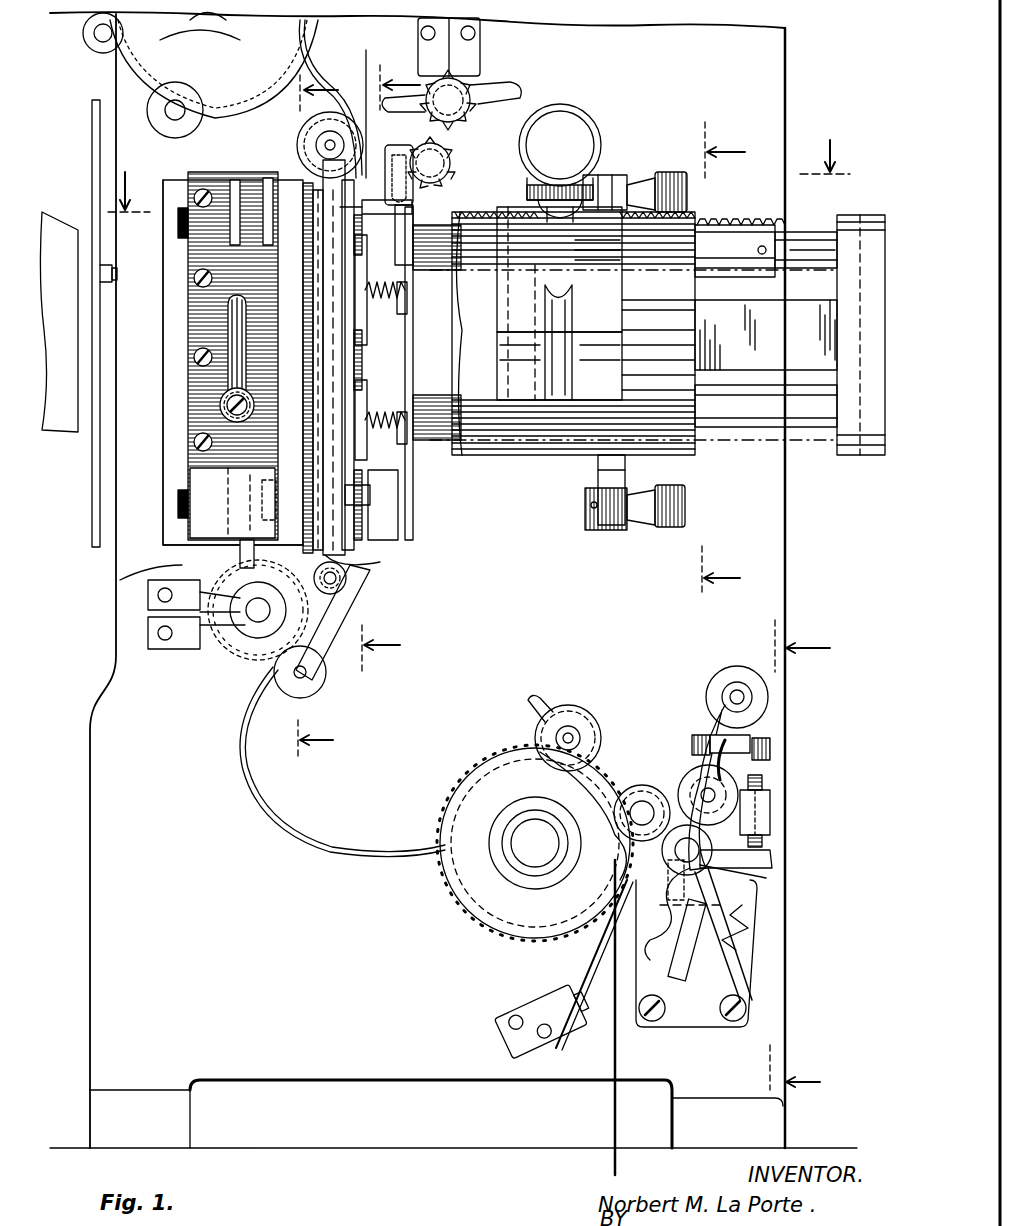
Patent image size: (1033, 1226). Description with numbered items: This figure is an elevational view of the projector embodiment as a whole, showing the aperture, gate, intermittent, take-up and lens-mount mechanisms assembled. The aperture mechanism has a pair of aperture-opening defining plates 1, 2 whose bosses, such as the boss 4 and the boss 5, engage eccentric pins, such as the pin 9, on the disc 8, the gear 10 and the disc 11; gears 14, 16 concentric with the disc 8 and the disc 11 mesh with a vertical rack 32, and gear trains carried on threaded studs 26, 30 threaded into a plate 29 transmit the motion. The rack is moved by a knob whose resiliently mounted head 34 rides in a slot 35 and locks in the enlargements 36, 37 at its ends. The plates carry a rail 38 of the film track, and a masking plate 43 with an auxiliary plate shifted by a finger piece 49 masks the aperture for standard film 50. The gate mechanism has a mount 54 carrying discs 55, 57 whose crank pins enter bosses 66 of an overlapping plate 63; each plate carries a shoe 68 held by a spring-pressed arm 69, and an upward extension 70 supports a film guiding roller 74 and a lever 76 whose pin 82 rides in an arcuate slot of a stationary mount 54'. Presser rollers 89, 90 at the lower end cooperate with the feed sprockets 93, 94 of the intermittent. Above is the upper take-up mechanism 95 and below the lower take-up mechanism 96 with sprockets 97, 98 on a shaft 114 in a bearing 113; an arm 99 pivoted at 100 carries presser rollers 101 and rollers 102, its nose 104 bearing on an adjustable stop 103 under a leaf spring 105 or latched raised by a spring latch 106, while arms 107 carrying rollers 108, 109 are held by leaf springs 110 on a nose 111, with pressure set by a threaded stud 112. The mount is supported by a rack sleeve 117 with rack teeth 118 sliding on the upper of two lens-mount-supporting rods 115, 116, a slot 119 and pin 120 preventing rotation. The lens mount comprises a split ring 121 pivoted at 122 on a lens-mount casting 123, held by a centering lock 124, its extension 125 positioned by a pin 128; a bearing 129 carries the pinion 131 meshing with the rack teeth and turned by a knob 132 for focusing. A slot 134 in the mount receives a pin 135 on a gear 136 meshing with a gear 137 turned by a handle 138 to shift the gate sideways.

The aperture-opening defining plate 1 is at (290, 438).
The aperture-opening defining plate 2 is at (304, 411).
The boss 4 is at (479, 191).
The boss 5 is at (391, 365).
The disc 8 is at (270, 178).
The pin 9 is at (723, 357).
The gear 10 is at (802, 855).
The disc 11 is at (232, 548).
The gear 14 is at (235, 180).
The gear 16 is at (185, 546).
The threaded stud 26 is at (178, 225).
The plate 29 is at (183, 426).
The threaded stud 30 is at (178, 495).
The rack 32 is at (120, 580).
The head 34 is at (220, 405).
The slot 35 is at (226, 340).
The enlargement 36 is at (232, 308).
The enlargement 37 is at (222, 416).
The rail 38 is at (295, 452).
The masking plate 43 is at (298, 382).
The finger piece 49 is at (300, 352).
The film 50 is at (298, 862).
The mount 54 is at (398, 365).
The stationary mount 54' is at (283, 370).
The disc 55 is at (425, 235).
The disc 57 is at (380, 560).
The plate 63 is at (358, 376).
The boss 66 is at (370, 490).
The shoe 68 is at (356, 362).
The spring-pressed arm 69 is at (355, 345).
The extension 70 is at (312, 136).
The film guiding roller 74 is at (305, 140).
The lever 76 is at (366, 120).
The pin 82 is at (412, 206).
The presser roller 89 is at (348, 575).
The presser roller 90 is at (320, 683).
The feed sprocket 93 is at (242, 655).
The feed sprocket 94 is at (225, 650).
The upper take-up mechanism 95 is at (162, 42).
The lower take-up mechanism 96 is at (462, 950).
The driven sprocket 97 is at (452, 893).
The driven sprocket 98 is at (460, 920).
The arm 99 is at (600, 748).
The pivot 100 is at (665, 914).
The presser roller 101 is at (576, 706).
The roller 102 is at (640, 784).
The adjustable stop 103 is at (770, 838).
The nose 104 is at (760, 862).
The leaf spring 105 is at (735, 880).
The spring latch 106 is at (755, 958).
The arm 107 is at (752, 730).
The roller 108 is at (740, 666).
The roller 109 is at (690, 770).
The leaf spring 110 is at (735, 888).
The nose 111 is at (760, 925).
The threaded stud 112 is at (715, 733).
The bearing 113 is at (500, 820).
The shaft 114 is at (535, 832).
The lens-mount-supporting rod 115 is at (790, 237).
The lens-mount-supporting rod 116 is at (752, 428).
The rack sleeve 117 is at (735, 242).
The rack teeth 118 is at (710, 222).
The slot 119 is at (815, 256).
The pin 120 is at (760, 255).
The split ring 121 is at (513, 458).
The pivot 122 is at (595, 525).
The lens-mount casting 123 is at (596, 470).
The centering lock 124 is at (652, 528).
The extension 125 is at (608, 176).
The pin 128 is at (665, 174).
The bearing 129 is at (545, 207).
The pinion 131 is at (543, 222).
The knob 132 is at (585, 120).
The slot 134 is at (454, 162).
The pin 135 is at (394, 164).
The gear 136 is at (465, 136).
The gear 137 is at (463, 62).
The handle 138 is at (498, 88).